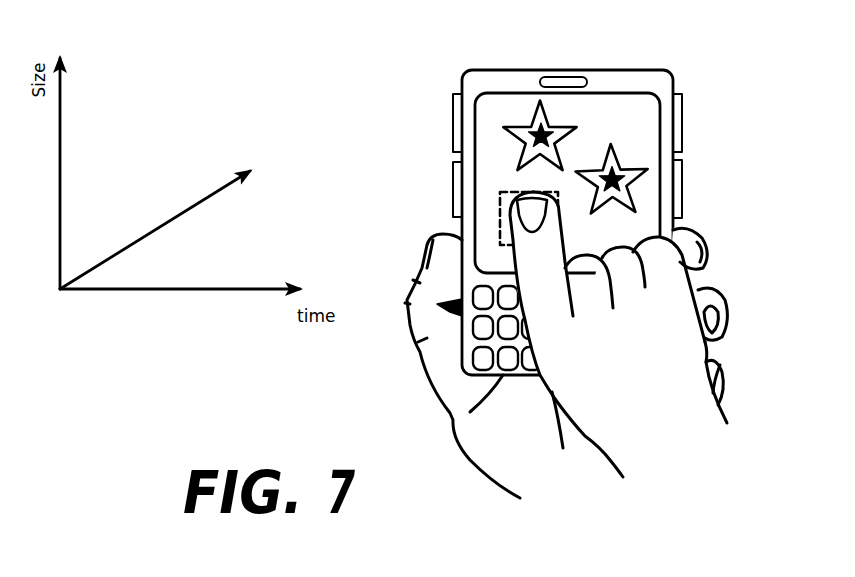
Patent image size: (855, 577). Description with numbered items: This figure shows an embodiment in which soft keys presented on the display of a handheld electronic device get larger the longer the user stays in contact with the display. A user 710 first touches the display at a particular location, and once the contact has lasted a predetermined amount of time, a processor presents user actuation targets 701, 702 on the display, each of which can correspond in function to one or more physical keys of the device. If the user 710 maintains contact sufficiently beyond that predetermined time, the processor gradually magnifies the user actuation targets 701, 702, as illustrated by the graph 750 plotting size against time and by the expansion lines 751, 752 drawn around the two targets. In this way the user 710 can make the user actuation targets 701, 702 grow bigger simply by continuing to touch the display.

The user actuation target 701 is at (541, 124).
The user actuation target 702 is at (630, 176).
The expansion line 751 is at (506, 124).
The expansion line 752 is at (612, 144).
The user 710 is at (513, 242).
The graph 750 is at (158, 258).